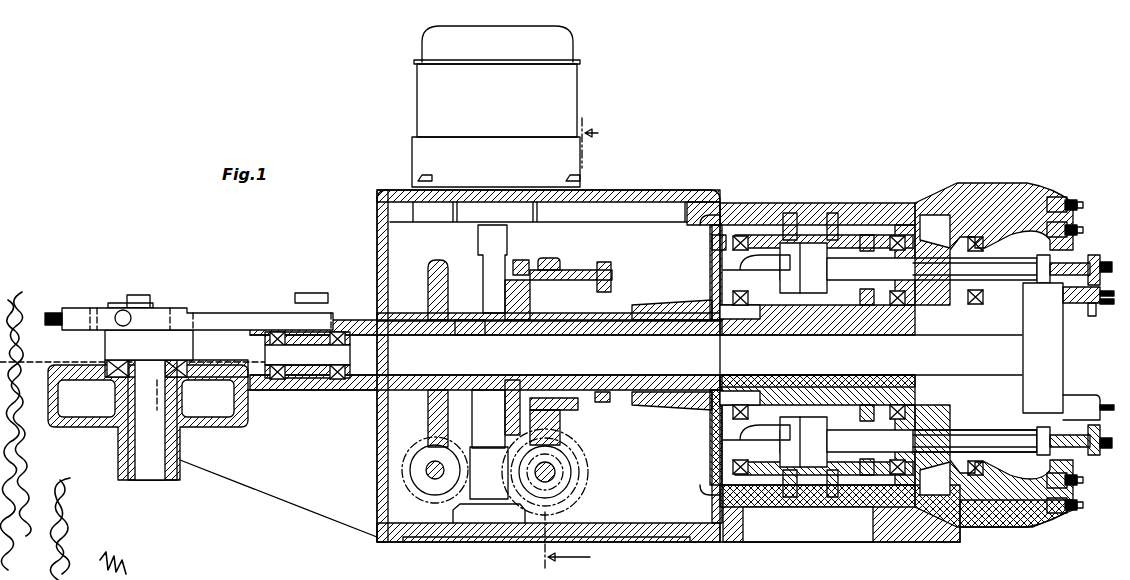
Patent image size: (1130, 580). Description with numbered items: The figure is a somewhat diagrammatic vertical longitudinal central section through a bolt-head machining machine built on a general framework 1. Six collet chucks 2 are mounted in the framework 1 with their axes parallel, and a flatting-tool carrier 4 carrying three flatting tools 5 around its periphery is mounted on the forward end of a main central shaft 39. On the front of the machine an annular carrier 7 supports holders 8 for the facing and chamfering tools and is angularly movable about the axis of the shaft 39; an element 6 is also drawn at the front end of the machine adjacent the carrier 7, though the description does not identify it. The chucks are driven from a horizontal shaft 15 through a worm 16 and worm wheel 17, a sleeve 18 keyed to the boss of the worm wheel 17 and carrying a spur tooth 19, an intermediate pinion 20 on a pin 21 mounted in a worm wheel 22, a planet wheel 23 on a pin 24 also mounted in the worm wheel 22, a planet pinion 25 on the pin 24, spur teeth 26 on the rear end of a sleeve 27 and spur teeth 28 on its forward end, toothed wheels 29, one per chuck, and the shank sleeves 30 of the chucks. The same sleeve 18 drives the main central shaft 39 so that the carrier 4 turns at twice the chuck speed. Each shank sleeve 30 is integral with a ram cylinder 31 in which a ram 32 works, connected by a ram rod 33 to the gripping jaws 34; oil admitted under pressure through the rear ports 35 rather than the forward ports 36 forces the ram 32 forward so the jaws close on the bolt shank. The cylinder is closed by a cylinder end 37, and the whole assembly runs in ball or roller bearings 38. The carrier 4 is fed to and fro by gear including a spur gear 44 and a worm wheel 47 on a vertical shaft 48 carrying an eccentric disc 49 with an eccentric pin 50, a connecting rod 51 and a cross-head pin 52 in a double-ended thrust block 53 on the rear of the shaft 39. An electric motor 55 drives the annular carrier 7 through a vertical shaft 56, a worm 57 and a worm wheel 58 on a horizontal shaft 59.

The general framework 1 is at (378, 422).
The collet chuck 2 is at (1028, 250).
The flatting-tool carrier 4 is at (1063, 354).
The flatting tool 5 is at (1028, 372).
The bolt 6 is at (1070, 260).
The annular carrier 7 is at (1000, 222).
The holder 8 is at (1068, 205).
The horizontal shaft 15 is at (426, 470).
The worm 16 is at (410, 492).
The worm wheel 17 is at (428, 290).
The sleeve 18 is at (464, 322).
The spur tooth 19 is at (522, 377).
The intermediate pinion 20 is at (510, 422).
The pin 21 is at (548, 404).
The worm wheel 22 is at (552, 426).
The planet wheel 23 is at (522, 262).
The pin 24 is at (568, 276).
The planet pinion 25 is at (613, 274).
The spur teeth 26 is at (607, 403).
The sleeve 27 is at (678, 400).
The spur teeth 28 is at (887, 380).
The toothed wheel 29 is at (872, 268).
The shank sleeve 30 is at (938, 428).
The ram cylinder 31 is at (745, 438).
The ram 32 is at (815, 255).
The ram rod 33 is at (895, 262).
The gripping jaws 34 is at (982, 304).
The rear port 35 is at (789, 235).
The port 36 is at (833, 240).
The cylinder end 37 is at (748, 222).
The ball or roller bearings 38 is at (714, 246).
The main central shaft 39 is at (688, 342).
The spur gear 44 is at (566, 470).
The worm wheel 47 is at (200, 398).
The vertical shaft 48 is at (140, 446).
The eccentric disc 49 is at (185, 345).
The eccentric pin 50 is at (148, 290).
The connecting rod 51 is at (240, 320).
The cross-head pin 52 is at (312, 293).
The double-ended thrust block 53 is at (310, 378).
The electric motor 55 is at (420, 96).
The vertical shaft 56 is at (485, 258).
The worm 57 is at (475, 492).
The worm wheel 58 is at (573, 480).
The horizontal shaft 59 is at (553, 480).